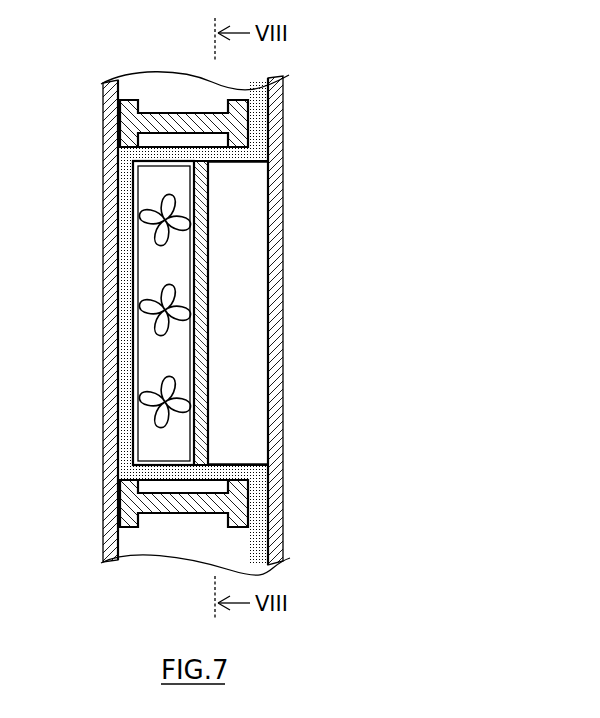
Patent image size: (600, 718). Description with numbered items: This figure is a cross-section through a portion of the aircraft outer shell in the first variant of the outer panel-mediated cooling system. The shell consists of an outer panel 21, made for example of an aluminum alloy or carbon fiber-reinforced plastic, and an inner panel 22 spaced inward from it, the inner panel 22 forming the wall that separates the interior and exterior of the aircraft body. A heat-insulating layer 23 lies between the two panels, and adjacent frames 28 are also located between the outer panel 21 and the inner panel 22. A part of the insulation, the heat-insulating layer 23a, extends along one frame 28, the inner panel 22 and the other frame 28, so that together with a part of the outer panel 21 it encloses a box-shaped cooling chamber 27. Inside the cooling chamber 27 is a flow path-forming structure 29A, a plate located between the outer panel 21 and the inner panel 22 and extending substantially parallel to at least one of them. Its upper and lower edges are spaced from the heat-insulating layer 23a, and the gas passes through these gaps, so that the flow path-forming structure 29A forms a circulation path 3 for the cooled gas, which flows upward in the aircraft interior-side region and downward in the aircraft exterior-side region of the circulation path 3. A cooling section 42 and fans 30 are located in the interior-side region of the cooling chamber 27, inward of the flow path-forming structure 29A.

The circulation path 3 is at (255, 331).
The outer panel 21 is at (284, 257).
The inner panel 22 is at (103, 222).
The heat-insulating layer 23 is at (125, 160).
The heat-insulating layer 23a is at (237, 162).
The cooling chamber 27 is at (248, 244).
The frame 28 is at (238, 106).
The flow path-forming structure 29A is at (208, 387).
The fan 30 is at (150, 206).
The cooling section 42 is at (150, 440).